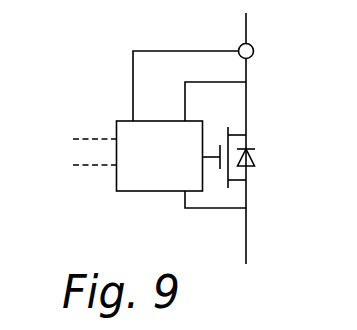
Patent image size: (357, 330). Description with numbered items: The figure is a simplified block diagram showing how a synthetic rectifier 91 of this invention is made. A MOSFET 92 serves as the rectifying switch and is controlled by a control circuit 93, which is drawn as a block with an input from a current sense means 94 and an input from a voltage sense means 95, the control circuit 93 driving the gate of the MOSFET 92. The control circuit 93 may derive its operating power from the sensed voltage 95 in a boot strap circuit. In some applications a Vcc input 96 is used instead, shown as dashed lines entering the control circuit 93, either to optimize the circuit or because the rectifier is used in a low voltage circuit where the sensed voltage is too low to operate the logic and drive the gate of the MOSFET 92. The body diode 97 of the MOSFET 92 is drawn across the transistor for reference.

The synthetic rectifier 91 is at (118, 31).
The MOSFET 92 is at (220, 117).
The control circuit 93 is at (142, 198).
The current sense means 94 is at (231, 42).
The voltage sense means 95 is at (250, 78).
The Vcc input 96 is at (103, 153).
The body diode 97 is at (256, 157).